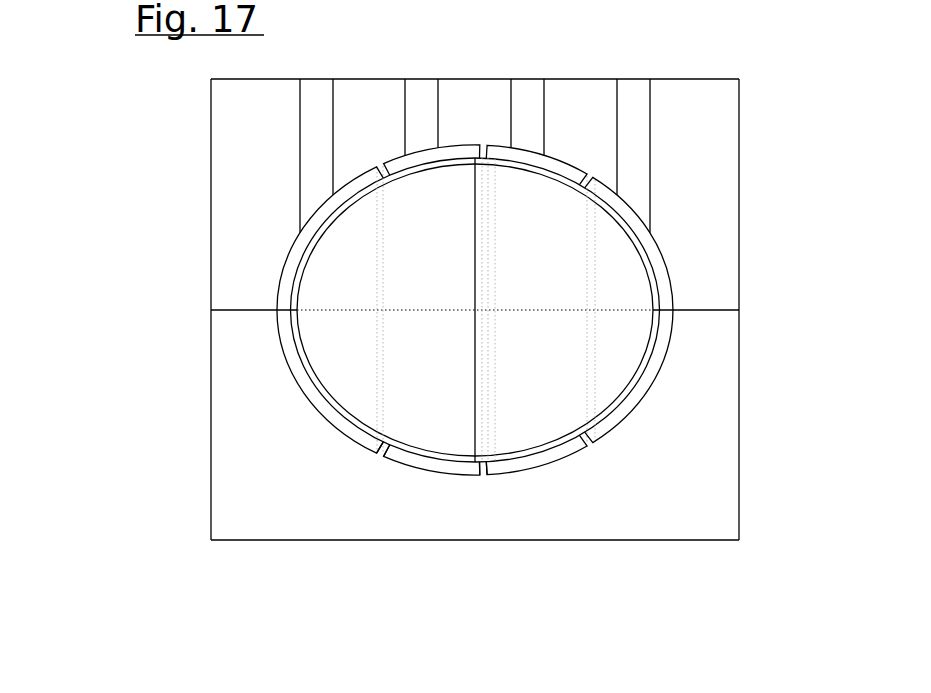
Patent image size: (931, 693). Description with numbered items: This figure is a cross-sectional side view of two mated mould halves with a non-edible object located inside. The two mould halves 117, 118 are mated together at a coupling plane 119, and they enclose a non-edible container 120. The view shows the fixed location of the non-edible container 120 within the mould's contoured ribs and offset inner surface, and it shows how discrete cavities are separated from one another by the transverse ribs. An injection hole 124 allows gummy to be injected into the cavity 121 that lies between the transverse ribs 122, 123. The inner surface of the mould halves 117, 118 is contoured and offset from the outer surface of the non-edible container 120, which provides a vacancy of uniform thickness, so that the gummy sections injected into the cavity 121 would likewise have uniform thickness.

The mould half 117 is at (200, 89).
The mould half 118 is at (200, 532).
The coupling plane 119 is at (202, 310).
The non-edible container 120 is at (647, 261).
The cavity 121 is at (422, 461).
The transverse rib 122 is at (372, 447).
The transverse rib 123 is at (490, 467).
The injection hole 124 is at (399, 126).